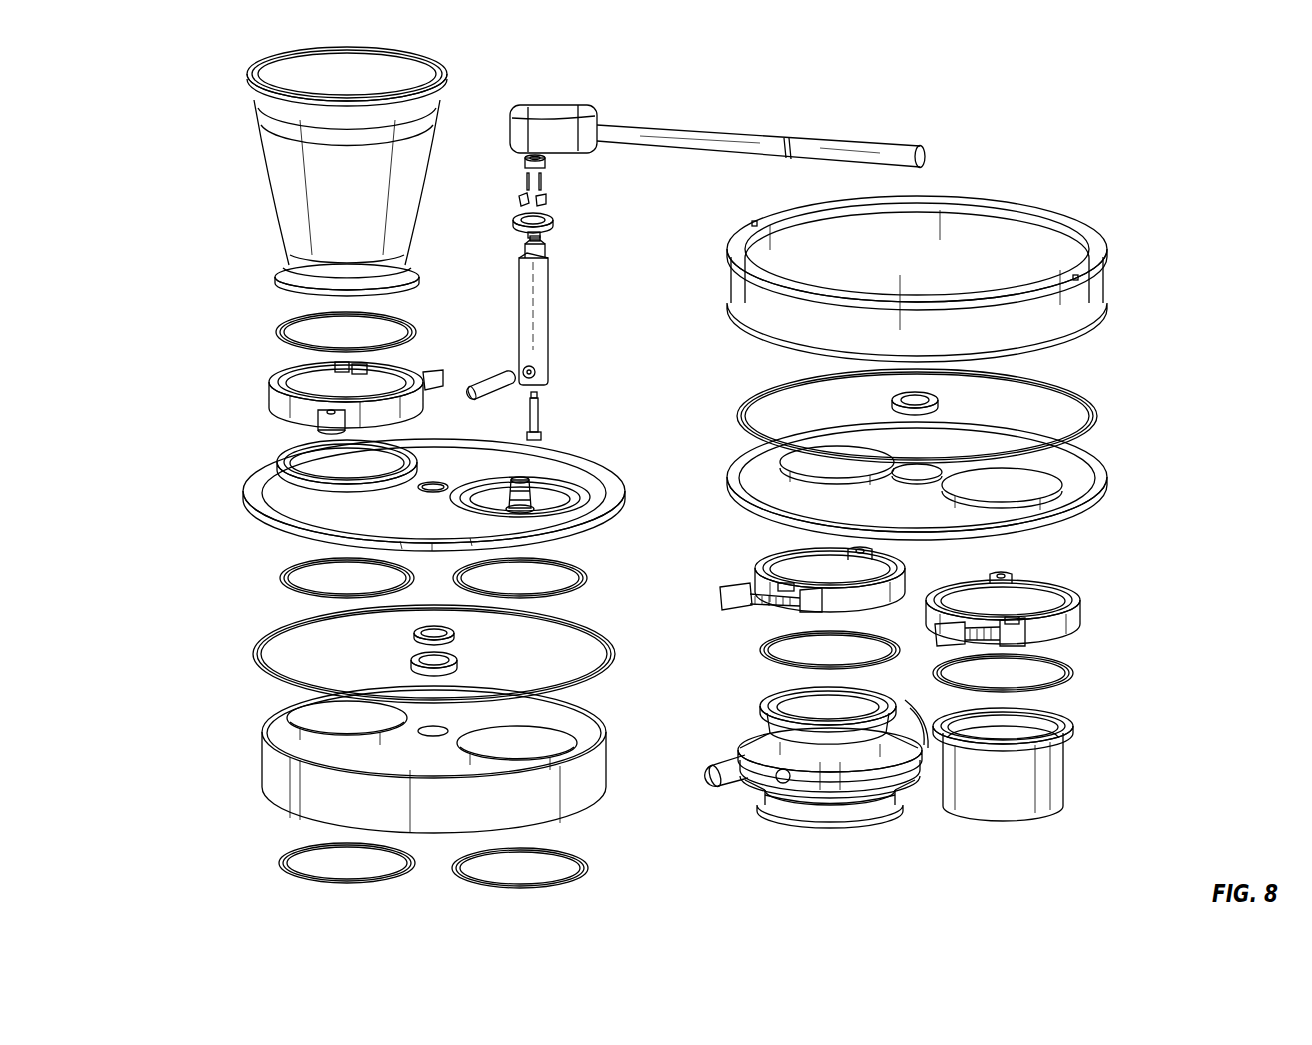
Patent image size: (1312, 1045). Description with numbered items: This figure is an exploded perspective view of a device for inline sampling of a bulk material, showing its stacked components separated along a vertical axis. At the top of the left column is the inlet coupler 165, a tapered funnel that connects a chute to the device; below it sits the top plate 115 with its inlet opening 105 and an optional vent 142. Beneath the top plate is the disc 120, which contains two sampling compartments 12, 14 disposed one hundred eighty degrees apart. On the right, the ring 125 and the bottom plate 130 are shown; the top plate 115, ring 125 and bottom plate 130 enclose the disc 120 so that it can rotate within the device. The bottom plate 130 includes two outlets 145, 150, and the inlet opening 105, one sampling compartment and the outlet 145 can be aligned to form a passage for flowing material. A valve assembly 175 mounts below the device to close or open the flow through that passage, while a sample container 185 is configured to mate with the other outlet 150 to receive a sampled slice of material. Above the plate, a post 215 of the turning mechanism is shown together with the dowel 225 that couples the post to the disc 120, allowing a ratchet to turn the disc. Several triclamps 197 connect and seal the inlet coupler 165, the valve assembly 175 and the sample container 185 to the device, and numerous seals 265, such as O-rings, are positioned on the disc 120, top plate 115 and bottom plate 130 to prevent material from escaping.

The sampling compartment 12 is at (327, 715).
The sampling compartment 14 is at (525, 738).
The inlet opening 105 is at (300, 452).
The top plate 115 is at (552, 461).
The disc 120 is at (395, 742).
The ring 125 is at (1092, 292).
The bottom plate 130 is at (930, 480).
The vent 142 is at (547, 498).
The outlet 145 is at (765, 460).
The outlet 150 is at (1035, 488).
The inlet coupler 165 is at (268, 193).
The valve assembly 175 is at (735, 757).
The sample container 185 is at (1067, 773).
The triclamp 197 is at (268, 395).
The post 215 is at (551, 320).
The dowel 225 is at (482, 372).
The seal 265 is at (288, 566).